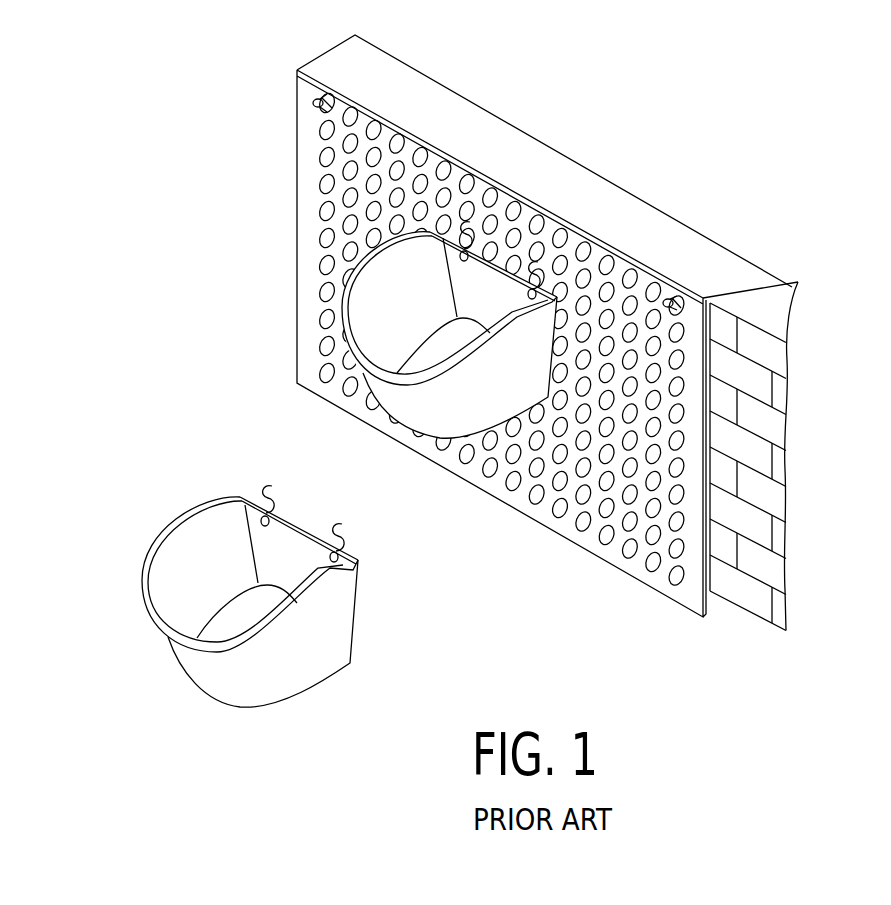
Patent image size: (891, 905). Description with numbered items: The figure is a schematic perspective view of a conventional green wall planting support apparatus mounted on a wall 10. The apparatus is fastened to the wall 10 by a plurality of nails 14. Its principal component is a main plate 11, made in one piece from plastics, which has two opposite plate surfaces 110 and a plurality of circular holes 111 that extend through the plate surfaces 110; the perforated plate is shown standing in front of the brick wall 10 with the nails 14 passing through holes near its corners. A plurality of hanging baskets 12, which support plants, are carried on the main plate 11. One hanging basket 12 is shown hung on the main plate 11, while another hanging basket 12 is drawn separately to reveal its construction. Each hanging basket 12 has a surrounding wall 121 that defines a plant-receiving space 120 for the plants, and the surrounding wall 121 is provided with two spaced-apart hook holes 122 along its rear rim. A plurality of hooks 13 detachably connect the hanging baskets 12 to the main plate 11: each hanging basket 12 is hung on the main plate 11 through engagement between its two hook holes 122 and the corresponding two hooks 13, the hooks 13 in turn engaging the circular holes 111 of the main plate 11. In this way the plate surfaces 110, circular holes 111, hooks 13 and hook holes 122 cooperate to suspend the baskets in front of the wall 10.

The wall 10 is at (773, 500).
The main plate 11 is at (553, 380).
The plate surfaces 110 is at (687, 592).
The circular holes 111 is at (560, 508).
The hanging baskets 12 is at (349, 502).
The plant-receiving space 120 is at (230, 617).
The surrounding wall 121 is at (250, 672).
The hook holes 122 is at (262, 524).
The hooks 13 is at (343, 522).
The nails 14 is at (317, 103).